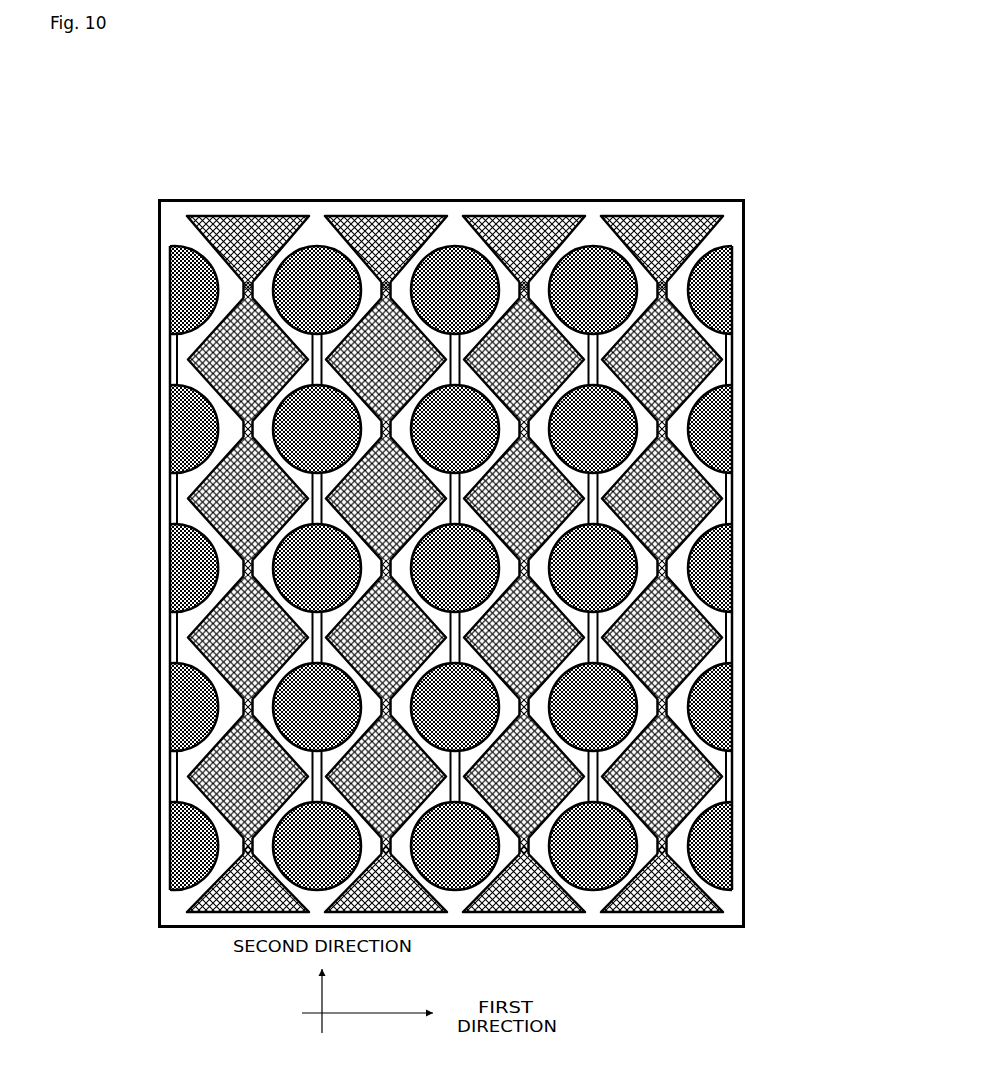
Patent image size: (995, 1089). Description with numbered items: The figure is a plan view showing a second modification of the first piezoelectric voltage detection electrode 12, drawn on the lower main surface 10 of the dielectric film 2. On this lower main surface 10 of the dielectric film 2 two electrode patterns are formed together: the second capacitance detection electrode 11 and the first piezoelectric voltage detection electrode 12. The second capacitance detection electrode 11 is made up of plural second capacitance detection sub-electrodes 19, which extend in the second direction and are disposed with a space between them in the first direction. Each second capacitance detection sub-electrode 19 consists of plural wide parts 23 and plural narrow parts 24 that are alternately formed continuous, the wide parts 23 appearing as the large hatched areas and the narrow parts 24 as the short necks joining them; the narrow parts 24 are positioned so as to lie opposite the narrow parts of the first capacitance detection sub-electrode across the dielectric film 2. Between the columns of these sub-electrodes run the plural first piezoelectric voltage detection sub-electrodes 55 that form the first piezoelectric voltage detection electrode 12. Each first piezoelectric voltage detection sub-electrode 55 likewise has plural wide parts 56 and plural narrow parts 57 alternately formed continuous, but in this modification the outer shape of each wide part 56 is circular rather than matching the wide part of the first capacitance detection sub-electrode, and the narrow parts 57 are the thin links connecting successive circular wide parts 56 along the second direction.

The dielectric film 2 is at (749, 213).
The lower main surface 10 is at (713, 209).
The second capacitance detection electrode 11 is at (238, 128).
The first piezoelectric voltage detection electrode 12 is at (607, 128).
The second capacitance detection sub-electrode 19 is at (246, 212).
The wide part 23 is at (724, 357).
The narrow part 24 is at (668, 428).
The first piezoelectric voltage detection sub-electrode 55 is at (455, 243).
The wide part 56 is at (272, 294).
The narrow part 57 is at (305, 357).